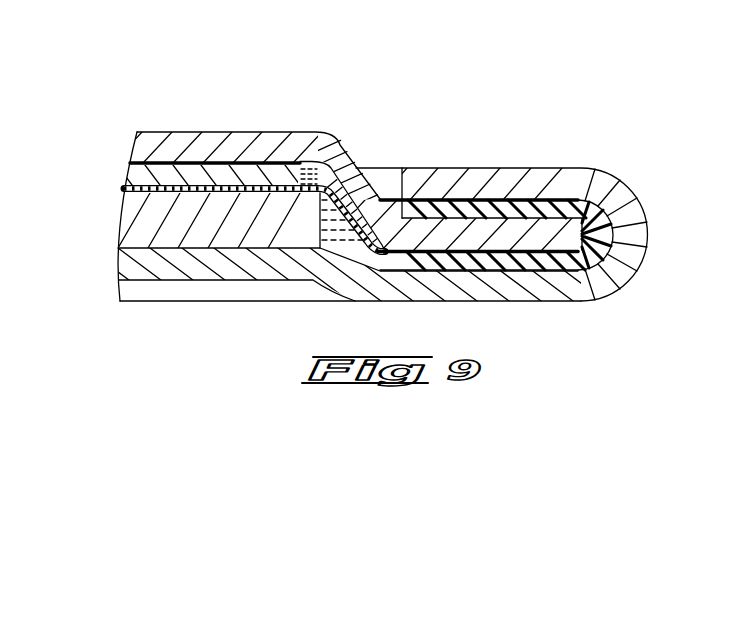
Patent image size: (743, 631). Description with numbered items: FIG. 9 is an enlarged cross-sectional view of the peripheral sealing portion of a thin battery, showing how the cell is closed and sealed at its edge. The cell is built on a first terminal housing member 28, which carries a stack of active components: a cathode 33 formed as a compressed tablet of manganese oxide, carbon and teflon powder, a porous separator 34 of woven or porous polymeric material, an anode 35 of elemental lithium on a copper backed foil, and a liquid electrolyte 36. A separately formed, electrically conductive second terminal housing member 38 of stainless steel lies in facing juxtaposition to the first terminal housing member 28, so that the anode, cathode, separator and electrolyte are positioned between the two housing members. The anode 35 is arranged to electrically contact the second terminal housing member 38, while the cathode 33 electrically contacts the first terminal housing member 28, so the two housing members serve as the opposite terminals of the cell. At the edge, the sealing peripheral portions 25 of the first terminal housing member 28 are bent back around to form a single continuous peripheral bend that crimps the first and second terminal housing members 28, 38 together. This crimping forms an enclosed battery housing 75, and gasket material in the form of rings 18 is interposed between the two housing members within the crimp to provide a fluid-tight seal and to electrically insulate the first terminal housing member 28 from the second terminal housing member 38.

The gasket material rings 18 is at (525, 208).
The sealing peripheral portions 25 is at (458, 176).
The first terminal housing member 28 is at (188, 273).
The cathode 33 is at (127, 236).
The porous separator 34 is at (128, 187).
The anode 35 is at (138, 177).
The liquid electrolyte 36 is at (375, 200).
The second terminal housing member 38 is at (221, 137).
The enclosed battery housing 75 is at (345, 118).